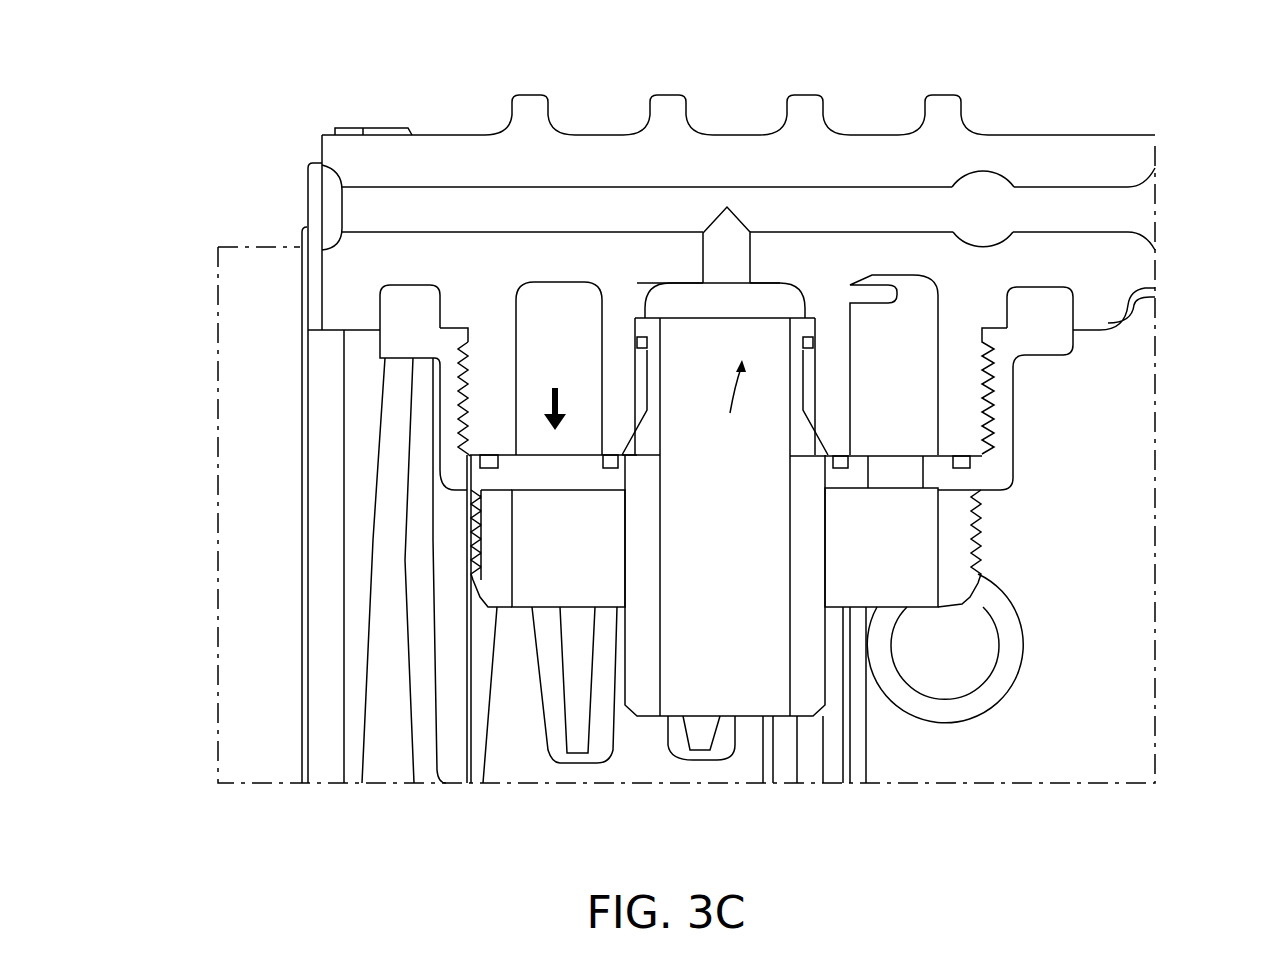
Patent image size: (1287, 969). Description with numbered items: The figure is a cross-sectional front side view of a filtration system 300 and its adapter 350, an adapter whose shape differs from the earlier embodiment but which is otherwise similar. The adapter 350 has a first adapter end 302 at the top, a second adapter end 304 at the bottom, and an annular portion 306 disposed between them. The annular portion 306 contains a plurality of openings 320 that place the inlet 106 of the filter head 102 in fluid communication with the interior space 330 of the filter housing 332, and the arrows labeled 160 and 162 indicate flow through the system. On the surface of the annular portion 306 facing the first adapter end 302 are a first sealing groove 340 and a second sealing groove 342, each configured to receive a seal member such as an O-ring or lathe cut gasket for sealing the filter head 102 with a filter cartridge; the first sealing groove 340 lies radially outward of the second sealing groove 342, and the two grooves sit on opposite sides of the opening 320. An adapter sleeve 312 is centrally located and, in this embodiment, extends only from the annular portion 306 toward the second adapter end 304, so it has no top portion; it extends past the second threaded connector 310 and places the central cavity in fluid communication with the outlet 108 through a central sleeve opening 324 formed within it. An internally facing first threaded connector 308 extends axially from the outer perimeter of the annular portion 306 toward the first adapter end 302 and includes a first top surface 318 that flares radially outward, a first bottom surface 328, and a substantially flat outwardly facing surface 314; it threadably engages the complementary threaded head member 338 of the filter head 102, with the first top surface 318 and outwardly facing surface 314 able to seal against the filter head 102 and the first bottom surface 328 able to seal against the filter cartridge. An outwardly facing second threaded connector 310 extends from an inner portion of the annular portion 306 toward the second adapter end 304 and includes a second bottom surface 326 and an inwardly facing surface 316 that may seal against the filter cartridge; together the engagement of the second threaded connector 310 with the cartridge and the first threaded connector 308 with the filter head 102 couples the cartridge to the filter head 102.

The filtration system 300 is at (214, 66).
The filter head 102 is at (356, 114).
The inlet 106 is at (572, 306).
The outlet 108 is at (736, 230).
The insertion direction 160 is at (558, 395).
The removal direction 162 is at (732, 401).
The first adapter end 302 is at (1046, 278).
The second adapter end 304 is at (812, 728).
The annular portion 306 is at (583, 477).
The first threaded connector 308 is at (448, 345).
The second threaded connector 310 is at (473, 573).
The adapter sleeve 312 is at (815, 687).
The outwardly facing surface 314 is at (438, 465).
The inwardly facing surface 316 is at (515, 563).
The first top surface 318 is at (395, 307).
The openings 320 is at (897, 478).
The central sleeve opening 324 is at (744, 698).
The second bottom surface 326 is at (948, 607).
The first bottom surface 328 is at (995, 490).
The interior space 330 is at (458, 766).
The filter housing 332 is at (307, 377).
The complementary threaded head member 338 is at (472, 395).
The first sealing groove 340 is at (485, 465).
The second sealing groove 342 is at (620, 463).
The adapter 350 is at (1055, 388).